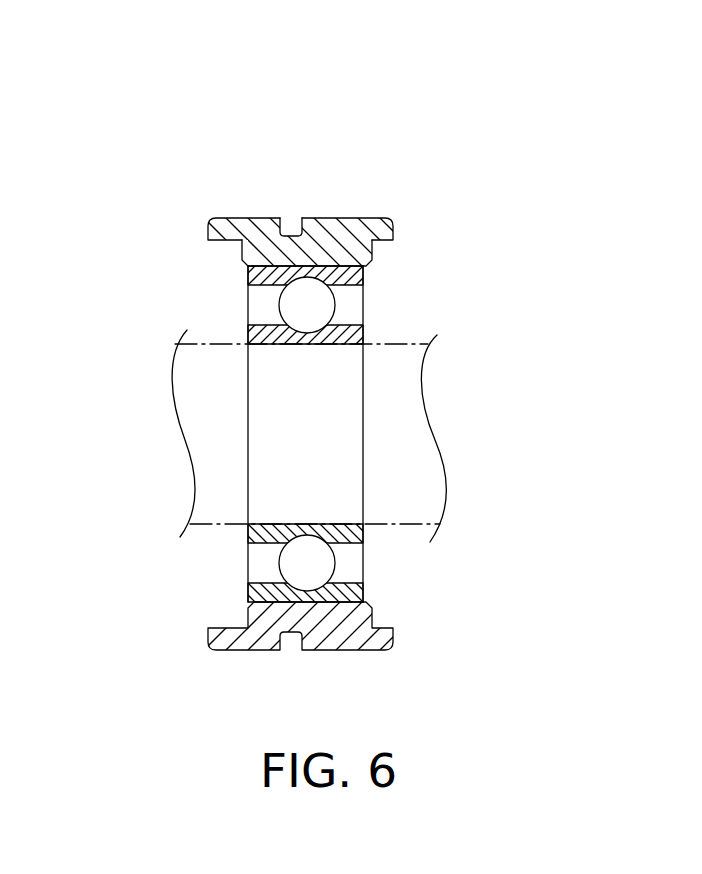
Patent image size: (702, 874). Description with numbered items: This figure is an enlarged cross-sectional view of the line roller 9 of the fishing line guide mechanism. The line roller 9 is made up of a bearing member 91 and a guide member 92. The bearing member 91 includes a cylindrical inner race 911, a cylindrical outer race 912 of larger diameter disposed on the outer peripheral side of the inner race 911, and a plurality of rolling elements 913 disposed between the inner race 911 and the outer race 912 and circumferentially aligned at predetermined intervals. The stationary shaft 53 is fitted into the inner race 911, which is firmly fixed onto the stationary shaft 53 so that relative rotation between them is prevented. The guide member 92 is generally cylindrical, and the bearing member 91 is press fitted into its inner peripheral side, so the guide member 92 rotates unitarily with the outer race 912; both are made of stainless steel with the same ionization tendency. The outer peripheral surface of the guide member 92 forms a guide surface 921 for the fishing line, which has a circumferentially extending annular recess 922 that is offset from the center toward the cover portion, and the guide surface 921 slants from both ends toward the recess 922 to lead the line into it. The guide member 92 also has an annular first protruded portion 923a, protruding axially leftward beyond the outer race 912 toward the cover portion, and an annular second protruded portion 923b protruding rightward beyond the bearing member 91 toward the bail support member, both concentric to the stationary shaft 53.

The line roller 9 is at (254, 138).
The guide member 92 is at (397, 211).
The guide surface 921 is at (347, 218).
The annular recess 922 is at (292, 217).
The first protruded portion 923a is at (212, 233).
The second protruded portion 923b is at (395, 227).
The bearing member 91 is at (378, 309).
The inner race 911 is at (365, 338).
The outer race 912 is at (365, 275).
The rolling elements 913 is at (300, 306).
The stationary shaft 53 is at (222, 513).